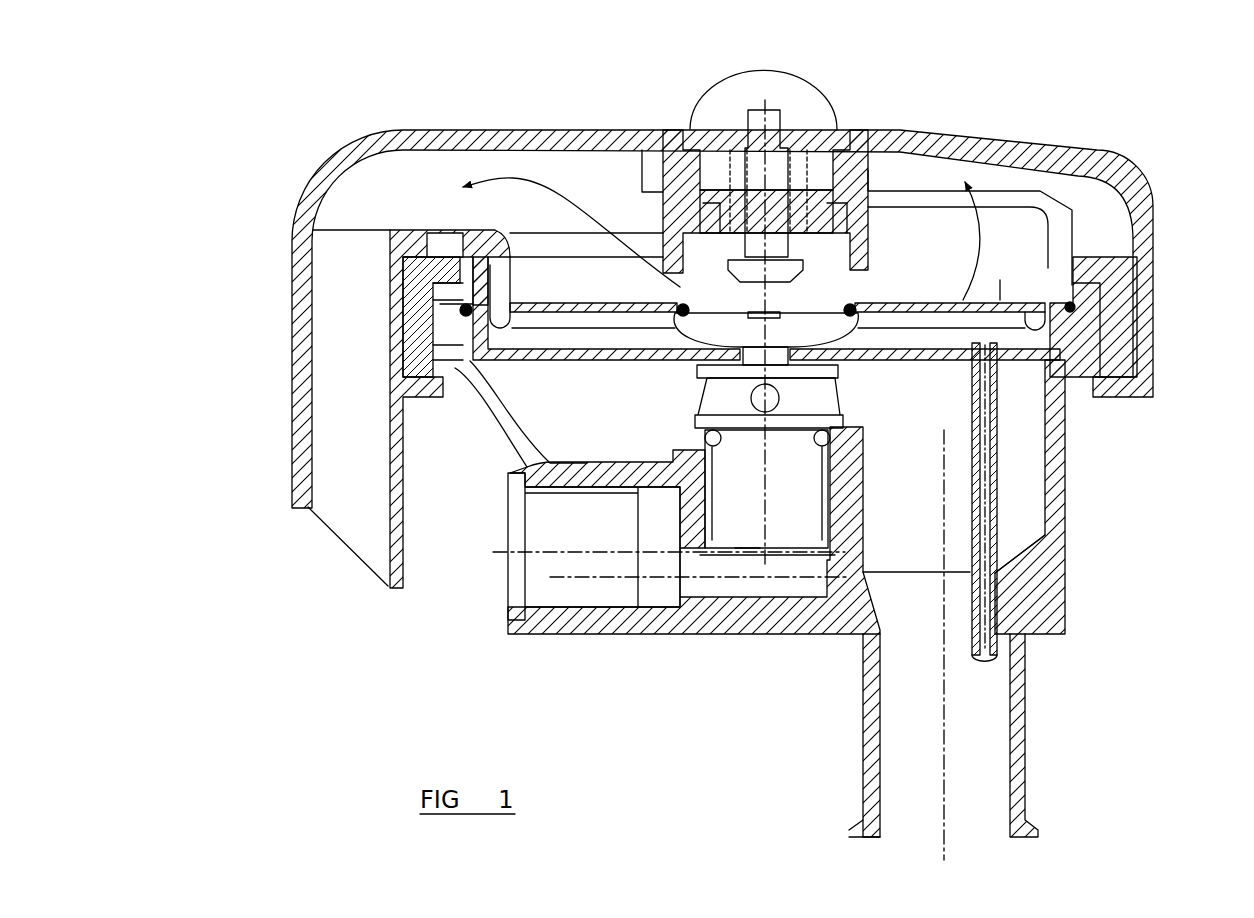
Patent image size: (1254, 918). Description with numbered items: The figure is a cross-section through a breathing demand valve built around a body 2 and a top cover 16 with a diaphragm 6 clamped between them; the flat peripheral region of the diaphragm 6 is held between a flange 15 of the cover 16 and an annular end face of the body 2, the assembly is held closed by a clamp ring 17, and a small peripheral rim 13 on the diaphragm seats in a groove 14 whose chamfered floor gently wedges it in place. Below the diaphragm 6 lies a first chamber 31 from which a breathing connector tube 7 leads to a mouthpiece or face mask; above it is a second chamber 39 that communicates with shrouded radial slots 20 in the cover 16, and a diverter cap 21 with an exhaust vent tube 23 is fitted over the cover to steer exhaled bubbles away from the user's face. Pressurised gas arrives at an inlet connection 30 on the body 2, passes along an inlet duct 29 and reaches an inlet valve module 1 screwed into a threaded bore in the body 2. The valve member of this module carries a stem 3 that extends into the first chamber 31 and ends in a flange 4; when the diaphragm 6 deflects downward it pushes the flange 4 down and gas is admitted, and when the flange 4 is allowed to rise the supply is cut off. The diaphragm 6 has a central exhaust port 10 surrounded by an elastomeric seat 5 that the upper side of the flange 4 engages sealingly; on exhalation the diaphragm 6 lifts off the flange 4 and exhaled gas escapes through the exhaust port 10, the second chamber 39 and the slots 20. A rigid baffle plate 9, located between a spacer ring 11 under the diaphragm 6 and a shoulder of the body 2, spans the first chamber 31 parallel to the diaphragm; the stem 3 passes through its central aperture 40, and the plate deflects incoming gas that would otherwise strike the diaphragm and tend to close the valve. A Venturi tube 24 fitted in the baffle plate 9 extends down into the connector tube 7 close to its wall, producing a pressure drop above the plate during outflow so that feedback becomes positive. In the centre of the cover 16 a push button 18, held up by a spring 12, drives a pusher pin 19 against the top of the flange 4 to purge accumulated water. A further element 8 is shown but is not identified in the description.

The inlet valve module 1 is at (787, 500).
The body 2 is at (1065, 512).
The stem 3 is at (750, 357).
The flange 4 is at (856, 303).
The seat 5 is at (870, 298).
The diaphragm 6 is at (1050, 398).
The breathing connector tube 7 is at (1030, 776).
The outlet opening 8 is at (997, 576).
The baffle plate 9 is at (580, 362).
The exhaust port 10 is at (820, 300).
The spacer ring 11 is at (468, 300).
The spring 12 is at (727, 173).
The peripheral rim 13 is at (473, 336).
The groove 14 is at (1080, 308).
The flange 15 is at (430, 290).
The top cover 16 is at (515, 284).
The clamp ring 17 is at (405, 273).
The push button 18 is at (738, 152).
The pusher pin 19 is at (760, 107).
The shrouded radial slots 20 is at (1023, 190).
The diverter cap 21 is at (1143, 192).
The exhaust vent tube 23 is at (330, 448).
The Venturi tube 24 is at (1000, 572).
The inlet duct 29 is at (743, 548).
The inlet connection 30 is at (577, 590).
The first chamber 31 is at (980, 673).
The second chamber 39 is at (1000, 280).
The central aperture 40 is at (848, 358).